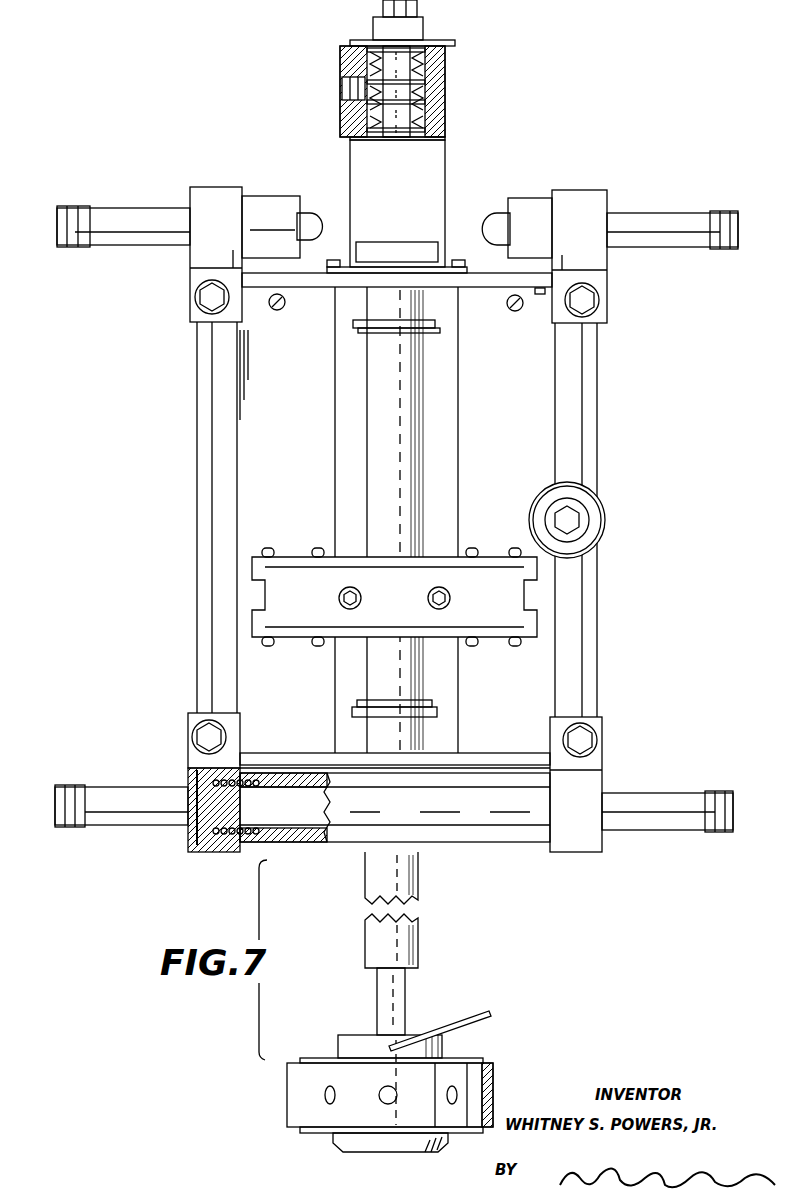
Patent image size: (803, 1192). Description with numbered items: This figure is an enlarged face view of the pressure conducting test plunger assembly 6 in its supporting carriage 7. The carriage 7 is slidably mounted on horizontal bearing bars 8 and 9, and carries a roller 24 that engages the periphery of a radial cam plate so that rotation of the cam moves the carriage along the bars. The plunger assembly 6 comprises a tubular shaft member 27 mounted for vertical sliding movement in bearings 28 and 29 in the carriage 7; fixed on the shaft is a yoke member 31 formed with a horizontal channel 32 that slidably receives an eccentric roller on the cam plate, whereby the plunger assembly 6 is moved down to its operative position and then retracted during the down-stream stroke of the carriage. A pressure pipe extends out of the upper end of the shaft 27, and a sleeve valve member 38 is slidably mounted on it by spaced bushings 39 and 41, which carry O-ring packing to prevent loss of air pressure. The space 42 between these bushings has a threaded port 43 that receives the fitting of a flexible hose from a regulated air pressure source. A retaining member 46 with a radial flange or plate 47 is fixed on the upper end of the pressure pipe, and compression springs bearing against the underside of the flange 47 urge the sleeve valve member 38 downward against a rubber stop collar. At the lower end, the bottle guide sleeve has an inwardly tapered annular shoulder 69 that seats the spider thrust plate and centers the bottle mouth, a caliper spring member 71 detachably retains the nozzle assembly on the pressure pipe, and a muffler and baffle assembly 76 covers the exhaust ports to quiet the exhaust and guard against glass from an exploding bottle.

The test plunger assembly 6 is at (420, 886).
The carriage 7 is at (200, 522).
The horizontal bearing bar 8 is at (130, 228).
The horizontal bearing bar 9 is at (133, 802).
The roller 24 is at (610, 520).
The tubular shaft member 27 is at (372, 416).
The bearing 28 is at (372, 312).
The bearing 29 is at (370, 728).
The yoke member 31 is at (310, 530).
The horizontal channel 32 is at (297, 600).
The sleeve valve member 38 is at (345, 62).
The bushing 39 is at (427, 115).
The bushing 41 is at (425, 62).
The space 42 is at (403, 90).
The port 43 is at (356, 88).
The retaining member 46 is at (410, 26).
The radial flange 47 is at (457, 44).
The inwardly tapered annular shoulder 69 is at (345, 1145).
The caliper spring member 71 is at (480, 1013).
The muffler and baffle assembly 76 is at (498, 1082).